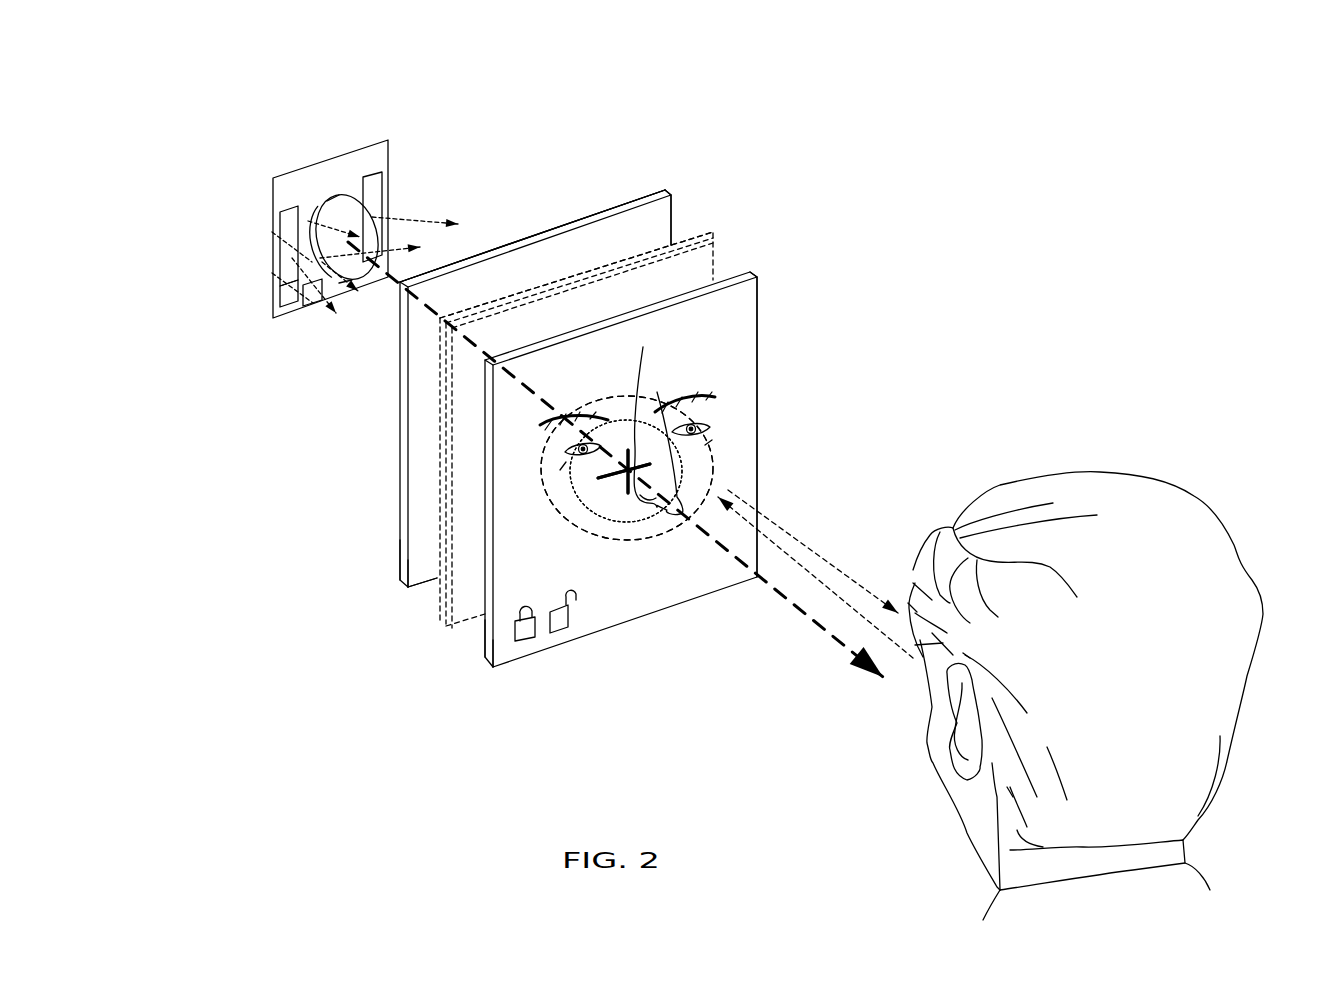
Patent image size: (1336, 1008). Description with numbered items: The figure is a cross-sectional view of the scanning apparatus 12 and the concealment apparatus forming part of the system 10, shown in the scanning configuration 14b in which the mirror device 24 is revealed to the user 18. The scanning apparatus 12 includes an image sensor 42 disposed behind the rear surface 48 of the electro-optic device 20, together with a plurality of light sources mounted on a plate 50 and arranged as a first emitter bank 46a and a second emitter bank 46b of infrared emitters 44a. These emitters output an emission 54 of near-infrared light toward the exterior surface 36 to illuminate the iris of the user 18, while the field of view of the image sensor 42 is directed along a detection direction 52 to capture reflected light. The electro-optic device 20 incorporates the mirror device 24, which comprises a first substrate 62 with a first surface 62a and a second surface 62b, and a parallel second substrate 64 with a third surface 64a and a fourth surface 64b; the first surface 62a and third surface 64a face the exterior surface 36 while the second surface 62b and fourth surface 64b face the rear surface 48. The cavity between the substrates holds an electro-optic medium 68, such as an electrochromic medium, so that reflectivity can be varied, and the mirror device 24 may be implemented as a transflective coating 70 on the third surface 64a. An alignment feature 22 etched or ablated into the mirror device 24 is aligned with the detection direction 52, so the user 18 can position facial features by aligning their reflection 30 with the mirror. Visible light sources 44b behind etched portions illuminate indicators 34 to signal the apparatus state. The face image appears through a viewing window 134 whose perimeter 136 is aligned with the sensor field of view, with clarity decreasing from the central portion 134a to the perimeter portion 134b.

The system 10 is at (618, 62).
The scanning apparatus 12 is at (288, 130).
The scanning configuration 14b is at (868, 230).
The user 18 is at (900, 753).
The electro-optic device 20 is at (740, 213).
The alignment feature 22 is at (635, 398).
The mirror device 24 is at (413, 627).
The reflection 30 is at (732, 462).
The light indicators 34 is at (560, 628).
The exterior surface 36 is at (740, 392).
The image sensor 42 is at (343, 213).
The infrared emitters 44a is at (283, 280).
The visible light sources 44b is at (312, 308).
The first emitter bank 46a is at (287, 230).
The second emitter bank 46b is at (373, 183).
The rear surface 48 is at (532, 226).
The housing plate 50 is at (331, 168).
The detection direction 52 is at (803, 617).
The emission 54 is at (395, 232).
The first substrate 62 is at (740, 288).
The first surface 62a is at (502, 653).
The second surface 62b is at (485, 630).
The second substrate 64 is at (400, 468).
The third surface 64a is at (418, 573).
The fourth surface 64b is at (400, 550).
The electro-optic medium 68 is at (715, 248).
The transflective coating 70 is at (640, 197).
The viewing window 134 is at (627, 398).
The central portion 134a is at (613, 510).
The perimeter portion 134b is at (710, 453).
The perimeter 136 is at (597, 543).